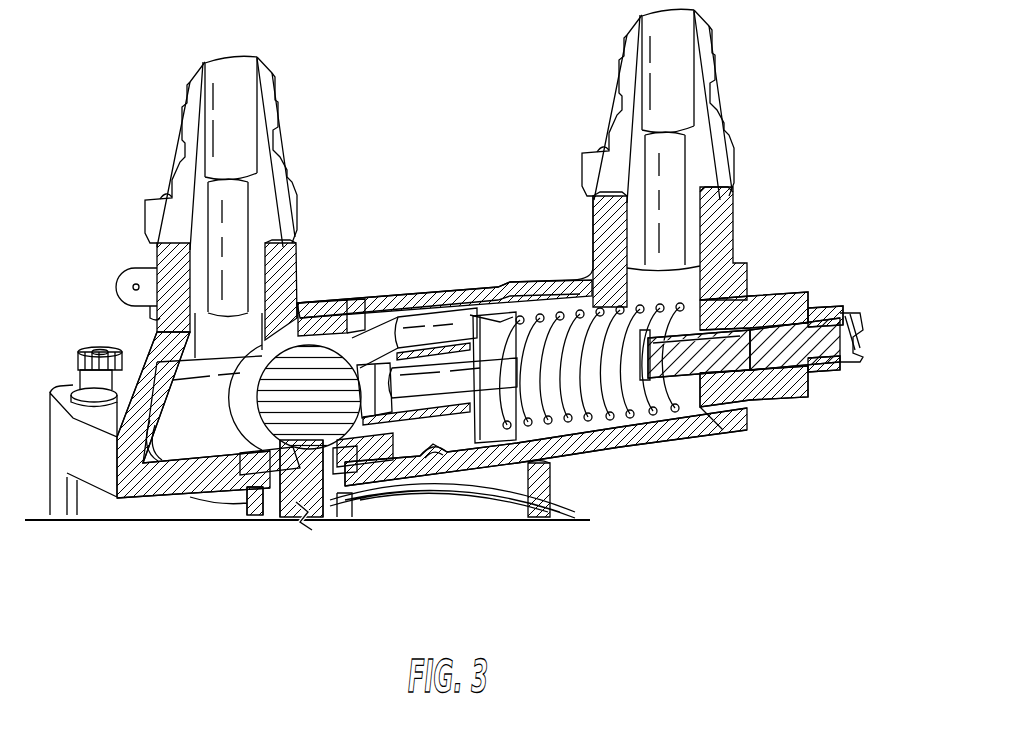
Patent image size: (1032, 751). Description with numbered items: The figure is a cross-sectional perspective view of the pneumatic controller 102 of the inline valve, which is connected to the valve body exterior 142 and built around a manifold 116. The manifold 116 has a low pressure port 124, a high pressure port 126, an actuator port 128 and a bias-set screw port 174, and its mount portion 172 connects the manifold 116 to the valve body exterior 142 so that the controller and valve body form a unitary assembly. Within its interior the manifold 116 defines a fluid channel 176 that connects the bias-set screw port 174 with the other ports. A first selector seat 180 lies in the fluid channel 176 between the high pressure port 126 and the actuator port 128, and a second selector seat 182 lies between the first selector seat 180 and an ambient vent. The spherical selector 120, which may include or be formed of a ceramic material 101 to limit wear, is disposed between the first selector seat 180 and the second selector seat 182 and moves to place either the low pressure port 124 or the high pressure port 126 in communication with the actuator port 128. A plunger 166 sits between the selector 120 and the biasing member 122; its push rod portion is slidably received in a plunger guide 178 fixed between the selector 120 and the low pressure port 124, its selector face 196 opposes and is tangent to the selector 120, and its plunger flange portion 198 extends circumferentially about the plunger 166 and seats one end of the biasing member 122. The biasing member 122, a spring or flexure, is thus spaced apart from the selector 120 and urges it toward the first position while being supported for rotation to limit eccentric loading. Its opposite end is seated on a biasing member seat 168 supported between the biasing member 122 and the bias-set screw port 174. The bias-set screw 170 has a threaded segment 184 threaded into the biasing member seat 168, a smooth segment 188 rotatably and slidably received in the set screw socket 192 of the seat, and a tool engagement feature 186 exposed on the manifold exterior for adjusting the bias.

The ceramic material 101 is at (317, 430).
The pneumatic controller 102 is at (133, 587).
The manifold 116 is at (490, 320).
The selector 120 is at (258, 398).
The biasing member 122 is at (580, 425).
The low pressure port 124 is at (662, 65).
The high pressure port 126 is at (231, 100).
The actuator port 128 is at (437, 455).
The valve body exterior 142 is at (735, 211).
The plunger 166 is at (422, 370).
The biasing member seat 168 is at (603, 380).
The bias-set screw 170 is at (797, 350).
The mount portion 172 is at (528, 480).
The bias-set screw port 174 is at (830, 298).
The fluid channel 176 is at (378, 345).
The plunger guide 178 is at (430, 345).
The first selector seat 180 is at (265, 345).
The second selector seat 182 is at (335, 313).
The threaded segment 184 is at (772, 305).
The tool engagement feature 186 is at (865, 316).
The smooth segment 188 is at (730, 262).
The set screw socket 192 is at (722, 380).
The selector face 196 is at (305, 300).
The plunger flange portion 198 is at (528, 325).